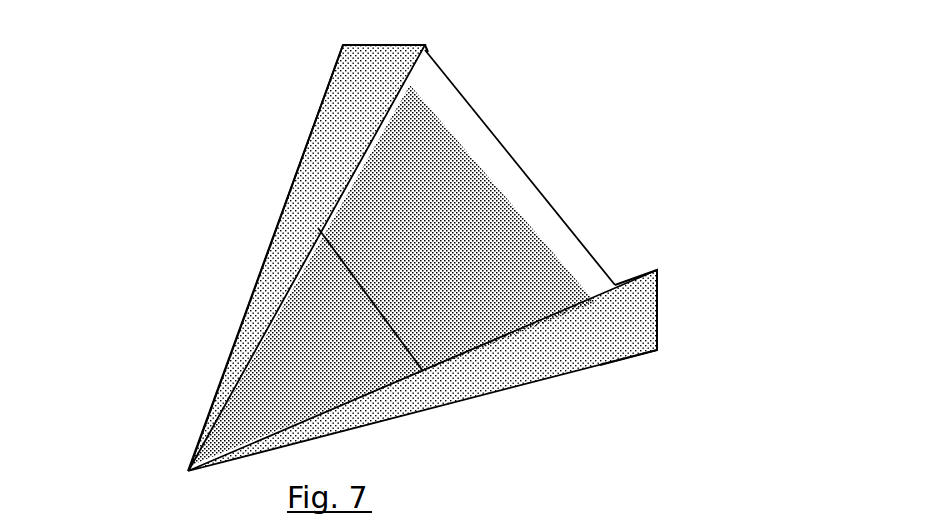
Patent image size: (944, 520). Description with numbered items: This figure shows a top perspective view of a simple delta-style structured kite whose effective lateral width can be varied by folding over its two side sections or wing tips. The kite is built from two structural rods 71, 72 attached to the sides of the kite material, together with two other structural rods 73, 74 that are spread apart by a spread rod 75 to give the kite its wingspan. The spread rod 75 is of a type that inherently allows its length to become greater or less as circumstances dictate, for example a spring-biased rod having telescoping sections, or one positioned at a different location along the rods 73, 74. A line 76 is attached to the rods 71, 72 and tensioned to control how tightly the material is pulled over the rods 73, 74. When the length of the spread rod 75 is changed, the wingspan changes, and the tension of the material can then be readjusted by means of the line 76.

The structural rod 71 is at (657, 279).
The structural rod 72 is at (425, 50).
The structural rod 73 is at (300, 150).
The structural rod 74 is at (570, 373).
The spread rod 75 is at (262, 283).
The line 76 is at (505, 153).